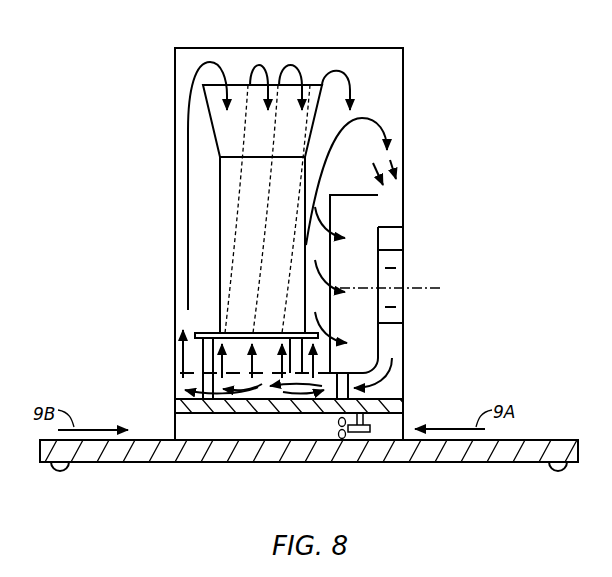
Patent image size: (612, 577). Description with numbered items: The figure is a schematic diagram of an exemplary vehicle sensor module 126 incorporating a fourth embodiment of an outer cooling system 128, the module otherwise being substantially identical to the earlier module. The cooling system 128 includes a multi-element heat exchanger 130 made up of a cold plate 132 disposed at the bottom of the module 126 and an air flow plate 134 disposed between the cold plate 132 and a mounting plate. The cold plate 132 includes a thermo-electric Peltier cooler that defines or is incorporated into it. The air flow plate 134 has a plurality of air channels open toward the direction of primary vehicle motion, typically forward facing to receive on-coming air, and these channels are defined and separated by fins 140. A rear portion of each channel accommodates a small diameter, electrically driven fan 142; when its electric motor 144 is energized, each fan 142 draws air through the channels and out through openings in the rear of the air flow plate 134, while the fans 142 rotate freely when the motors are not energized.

The vehicle sensor module 126 is at (500, 212).
The cooling system 128 is at (444, 416).
The multi-element heat exchanger 130 is at (172, 417).
The cold plate 132 is at (172, 401).
The air flow plate 134 is at (172, 436).
The fins 140 is at (243, 427).
The electrically driven fan 142 is at (339, 438).
The electric motor 144 is at (363, 433).